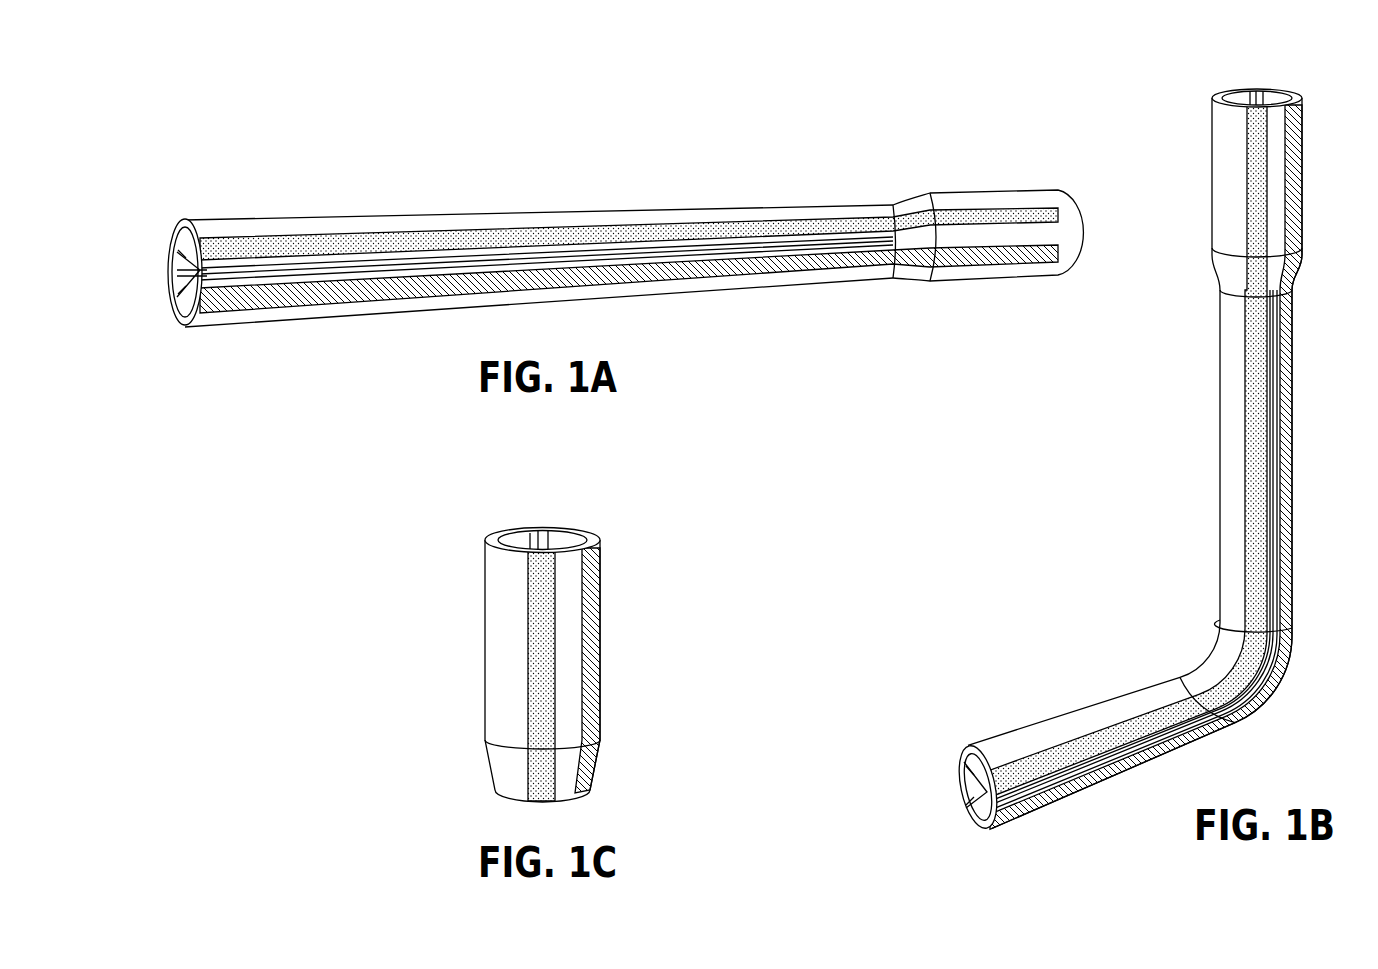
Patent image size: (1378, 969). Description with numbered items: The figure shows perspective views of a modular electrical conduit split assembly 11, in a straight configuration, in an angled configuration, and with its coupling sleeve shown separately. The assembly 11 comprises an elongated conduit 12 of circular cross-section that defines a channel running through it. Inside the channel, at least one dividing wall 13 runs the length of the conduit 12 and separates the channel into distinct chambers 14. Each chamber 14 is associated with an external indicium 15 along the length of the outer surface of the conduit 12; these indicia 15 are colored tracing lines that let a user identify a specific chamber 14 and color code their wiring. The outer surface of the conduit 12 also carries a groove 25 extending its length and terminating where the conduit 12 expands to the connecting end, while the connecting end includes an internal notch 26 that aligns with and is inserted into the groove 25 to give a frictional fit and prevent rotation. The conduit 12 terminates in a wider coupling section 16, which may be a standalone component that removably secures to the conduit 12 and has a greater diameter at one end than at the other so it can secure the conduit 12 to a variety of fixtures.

In FIG. 1A, the modular electrical conduit split assembly 11 is at (262, 113).
In FIG. 1A, the conduit 12 is at (402, 214).
In FIG. 1B, the conduit 12 is at (1218, 428).
In FIG. 1A, the dividing wall 13 is at (180, 275).
In FIG. 1B, the dividing wall 13 is at (1010, 812).
In FIG. 1A, the distinct chambers 14 is at (183, 252).
In FIG. 1B, the distinct chambers 14 is at (968, 800).
In FIG. 1A, the external indicium 15 is at (692, 230).
In FIG. 1B, the external indicium 15 is at (1283, 432).
In FIG. 1A, the coupling section 16 is at (988, 235).
In FIG. 1C, the coupling section 16 is at (600, 645).
In FIG. 1B, the coupling section 16 is at (1257, 197).
In FIG. 1A, the groove 25 is at (690, 262).
In FIG. 1B, the groove 25 is at (1270, 500).
In FIG. 1C, the internal notch 26 is at (543, 535).
In FIG. 1B, the internal notch 26 is at (1252, 93).